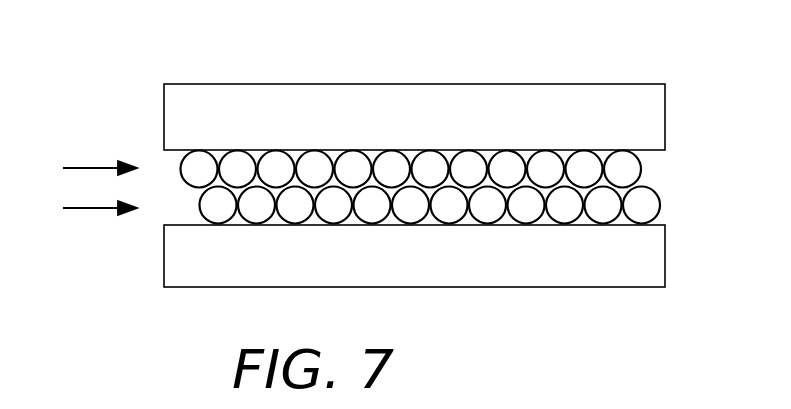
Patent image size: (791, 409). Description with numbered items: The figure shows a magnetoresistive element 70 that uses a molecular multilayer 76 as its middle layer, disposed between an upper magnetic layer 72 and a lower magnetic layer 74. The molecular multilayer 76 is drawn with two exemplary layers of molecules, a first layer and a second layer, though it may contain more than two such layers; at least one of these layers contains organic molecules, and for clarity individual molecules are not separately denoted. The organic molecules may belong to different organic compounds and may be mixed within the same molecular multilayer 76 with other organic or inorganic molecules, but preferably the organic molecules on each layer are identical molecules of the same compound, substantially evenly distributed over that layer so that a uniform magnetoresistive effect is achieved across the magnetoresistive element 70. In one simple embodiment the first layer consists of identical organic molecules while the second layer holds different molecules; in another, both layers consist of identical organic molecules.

The magnetoresistive element 70 is at (116, 80).
The magnetic layer 72 is at (450, 92).
The magnetic layer 74 is at (361, 271).
The molecular multilayer 76 is at (674, 150).